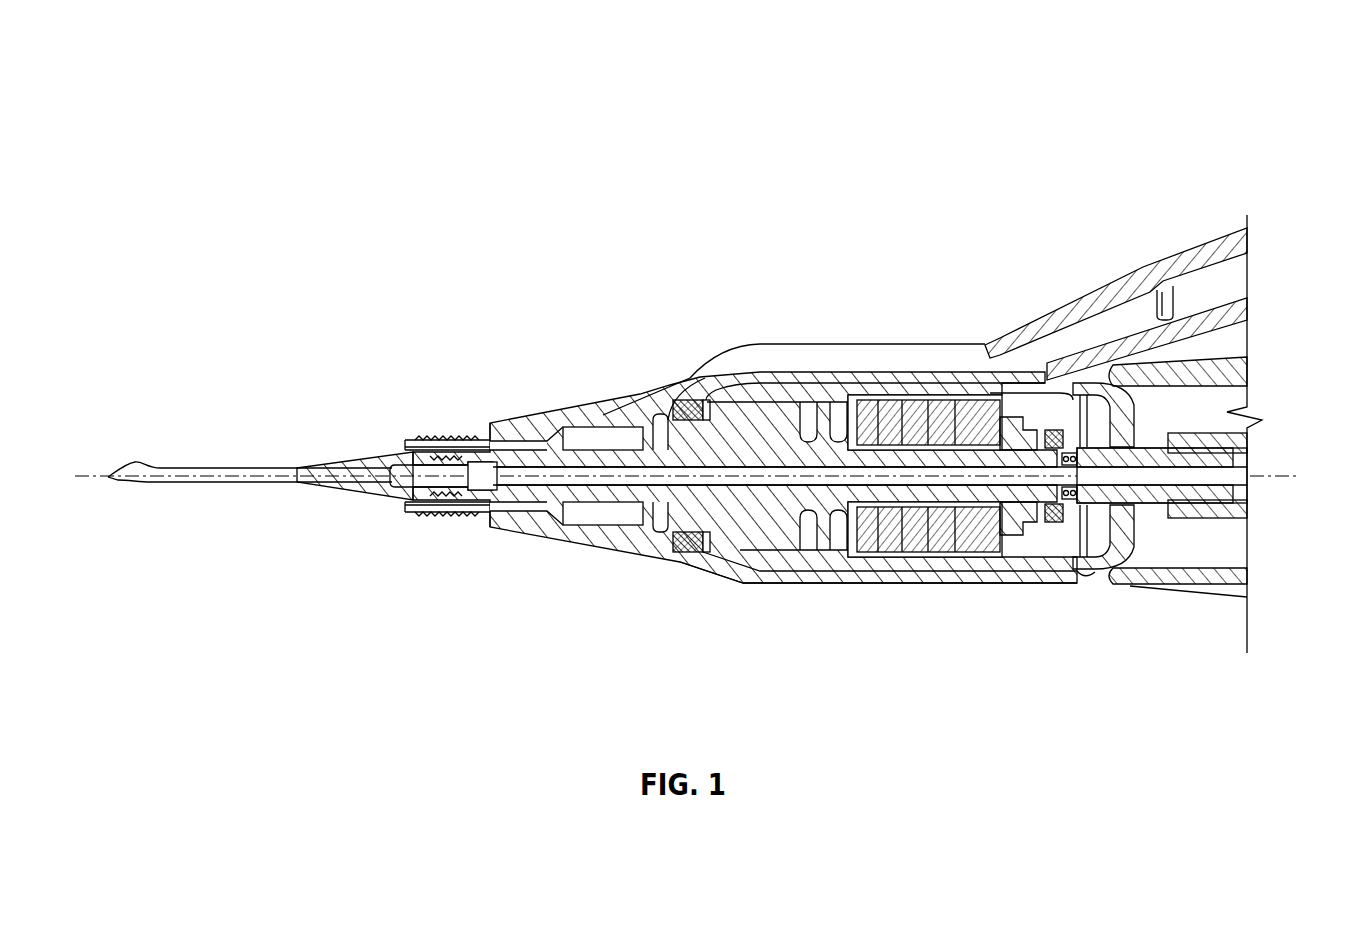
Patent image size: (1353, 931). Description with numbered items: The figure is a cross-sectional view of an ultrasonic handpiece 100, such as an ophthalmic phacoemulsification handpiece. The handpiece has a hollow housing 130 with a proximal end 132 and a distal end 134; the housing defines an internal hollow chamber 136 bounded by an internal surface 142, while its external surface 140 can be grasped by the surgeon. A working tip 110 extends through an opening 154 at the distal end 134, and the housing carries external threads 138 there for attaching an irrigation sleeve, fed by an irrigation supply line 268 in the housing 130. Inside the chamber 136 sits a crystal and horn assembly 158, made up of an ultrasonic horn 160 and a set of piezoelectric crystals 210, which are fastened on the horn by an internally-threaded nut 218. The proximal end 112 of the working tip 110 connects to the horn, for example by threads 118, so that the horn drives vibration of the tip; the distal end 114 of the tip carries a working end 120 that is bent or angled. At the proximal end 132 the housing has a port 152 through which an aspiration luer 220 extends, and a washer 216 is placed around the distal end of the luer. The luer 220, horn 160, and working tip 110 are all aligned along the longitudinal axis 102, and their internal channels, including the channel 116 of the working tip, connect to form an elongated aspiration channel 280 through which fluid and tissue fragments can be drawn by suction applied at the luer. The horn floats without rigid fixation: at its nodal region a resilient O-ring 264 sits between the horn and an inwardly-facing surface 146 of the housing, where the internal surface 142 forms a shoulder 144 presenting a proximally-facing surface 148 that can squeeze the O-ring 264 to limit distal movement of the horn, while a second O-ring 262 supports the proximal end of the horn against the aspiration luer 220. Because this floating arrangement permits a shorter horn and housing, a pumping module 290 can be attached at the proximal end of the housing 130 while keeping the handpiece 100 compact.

The ultrasonic handpiece 100 is at (262, 104).
The longitudinal axis 102 is at (528, 472).
The working tip 110 is at (240, 465).
The proximal end of the working tip 112 is at (491, 492).
The distal end of the working tip 114 is at (141, 448).
The channel of the working tip 116 is at (290, 483).
The threads 118 is at (440, 455).
The working end 120 is at (132, 492).
The housing 130 is at (850, 290).
The proximal end of the housing 132 is at (1097, 587).
The distal end of the housing 134 is at (404, 516).
The internal hollow chamber 136 is at (972, 388).
The external threads 138 is at (445, 517).
The external surface 140 is at (914, 585).
The internal surface 142 is at (803, 568).
The shoulder 144 is at (603, 414).
The inwardly-facing surface 146 is at (669, 534).
The proximally-facing surface 148 is at (657, 557).
The port 152 is at (1112, 368).
The opening 154 is at (396, 443).
The crystal and horn assembly 158 is at (969, 572).
The ultrasonic horn 160 is at (785, 432).
The set of piezoelectric crystals 210 is at (924, 388).
The washer 216 is at (1052, 430).
The internally-threaded nut 218 is at (1006, 418).
The aspiration luer 220 is at (1144, 495).
The O-ring 262 is at (1071, 500).
The O-ring 264 is at (686, 400).
The irrigation supply line 268 is at (815, 360).
The aspiration channel 280 is at (747, 478).
The pumping module 290 is at (1224, 590).